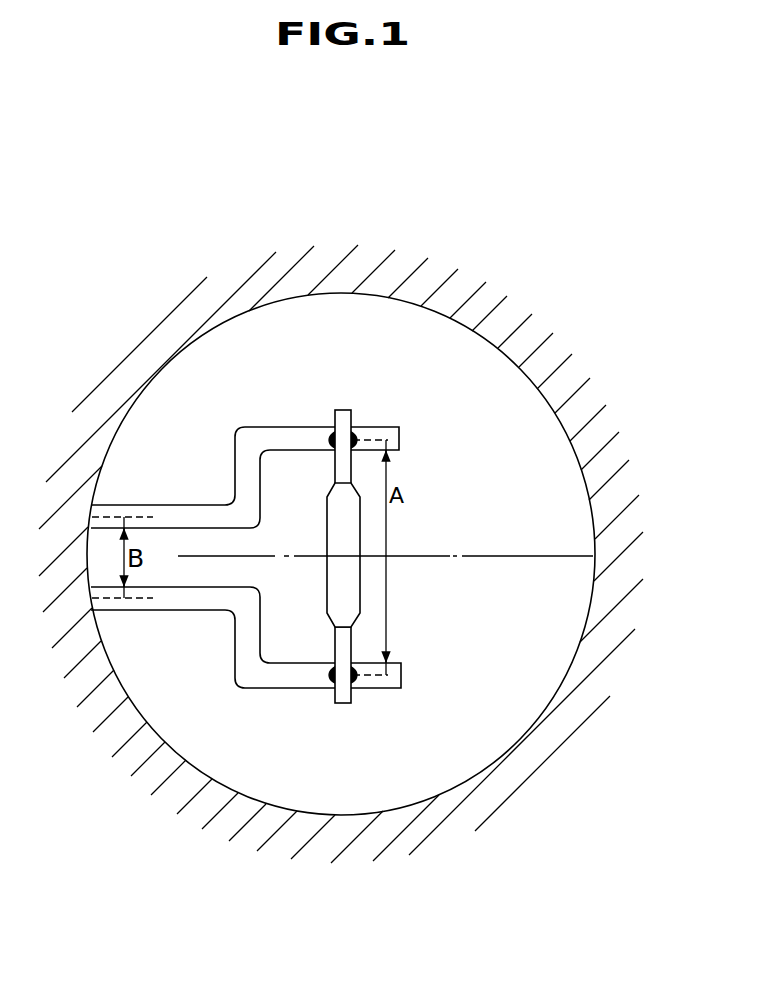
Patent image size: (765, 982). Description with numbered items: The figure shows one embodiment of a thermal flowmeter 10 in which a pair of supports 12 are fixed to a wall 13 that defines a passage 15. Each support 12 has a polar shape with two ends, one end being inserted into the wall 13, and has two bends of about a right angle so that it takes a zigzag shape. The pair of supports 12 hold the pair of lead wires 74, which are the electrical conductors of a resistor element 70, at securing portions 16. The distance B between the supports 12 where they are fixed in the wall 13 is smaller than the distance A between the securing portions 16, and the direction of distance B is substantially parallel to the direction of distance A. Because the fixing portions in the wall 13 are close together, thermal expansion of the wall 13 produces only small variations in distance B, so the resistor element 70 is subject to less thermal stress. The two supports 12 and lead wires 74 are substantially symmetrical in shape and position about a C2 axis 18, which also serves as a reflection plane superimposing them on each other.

The filter apparatus 10 is at (355, 588).
The support 12 is at (253, 427).
The wall 13 is at (85, 462).
The passage 15 is at (515, 677).
The securing portion 16 is at (357, 426).
The C2 axis 18 is at (497, 553).
The resistor element 70 is at (405, 597).
The lead wire 74 is at (343, 468).